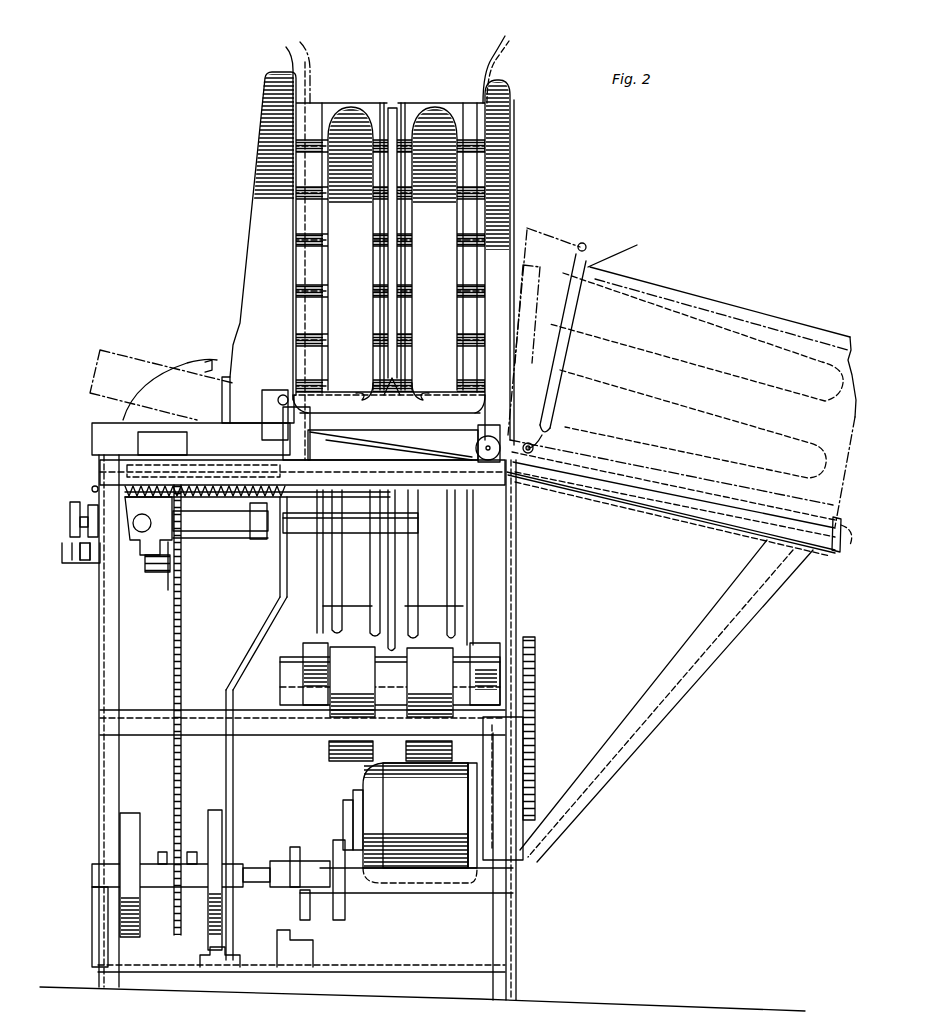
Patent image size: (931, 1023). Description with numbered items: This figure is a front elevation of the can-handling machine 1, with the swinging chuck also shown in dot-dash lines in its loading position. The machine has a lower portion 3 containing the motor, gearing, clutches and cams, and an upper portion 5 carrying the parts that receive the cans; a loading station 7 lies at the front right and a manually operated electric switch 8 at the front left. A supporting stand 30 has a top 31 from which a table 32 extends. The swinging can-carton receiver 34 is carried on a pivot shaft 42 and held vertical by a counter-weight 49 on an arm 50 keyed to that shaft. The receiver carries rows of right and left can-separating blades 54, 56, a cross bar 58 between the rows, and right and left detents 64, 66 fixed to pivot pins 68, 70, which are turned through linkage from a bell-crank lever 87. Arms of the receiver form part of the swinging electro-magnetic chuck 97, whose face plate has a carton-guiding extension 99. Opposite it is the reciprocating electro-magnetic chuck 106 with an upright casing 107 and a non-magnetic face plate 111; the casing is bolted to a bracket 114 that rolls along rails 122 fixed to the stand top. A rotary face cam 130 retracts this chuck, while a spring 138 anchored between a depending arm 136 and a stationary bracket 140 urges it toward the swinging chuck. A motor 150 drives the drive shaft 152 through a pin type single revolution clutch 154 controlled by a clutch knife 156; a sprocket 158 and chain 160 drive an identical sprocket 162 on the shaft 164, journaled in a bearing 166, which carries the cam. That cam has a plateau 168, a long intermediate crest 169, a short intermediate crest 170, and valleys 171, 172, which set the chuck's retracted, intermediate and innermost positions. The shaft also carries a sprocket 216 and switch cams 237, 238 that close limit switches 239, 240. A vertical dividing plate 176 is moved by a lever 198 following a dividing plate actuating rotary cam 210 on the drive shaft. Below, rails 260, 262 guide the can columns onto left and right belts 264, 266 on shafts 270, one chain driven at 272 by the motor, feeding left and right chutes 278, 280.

The machine 1 is at (610, 210).
The lower portion 3 is at (82, 684).
The upper portion 5 is at (165, 187).
The loading station 7 is at (768, 600).
The electric switch 8 is at (157, 432).
The supporting stand 30 is at (97, 775).
The top 31 is at (260, 451).
The table 32 is at (671, 498).
The swinging can-carton receiver 34 is at (512, 101).
The pivot shaft 42 is at (505, 452).
The counter-weight 49 is at (118, 363).
The arm 50 is at (248, 404).
The right can-separating blades 54 is at (441, 110).
The left can-separating blades 56 is at (349, 110).
The cross bar 58 is at (400, 416).
The right detents 64 is at (415, 398).
The left detents 66 is at (368, 398).
The right pivot pin 68 is at (511, 397).
The left pivot pin 70 is at (289, 425).
The bell-crank lever 87 is at (350, 534).
The swinging electro-magnetic chuck 97 is at (516, 170).
The carton-guiding extension 99 is at (667, 297).
The reciprocating electro-magnetic chuck 106 is at (318, 48).
The upright casing 107 is at (262, 150).
The face plate 111 is at (287, 50).
The bracket 114 is at (206, 361).
The rails 122 is at (90, 437).
The rotary face cam 130 is at (172, 596).
The depending arm 136 is at (97, 467).
The spring 138 is at (235, 492).
The stationary bracket 140 is at (300, 503).
The motor 150 is at (450, 872).
The drive shaft 152 is at (258, 867).
The pin type single revolution clutch 154 is at (320, 928).
The clutch knife 156 is at (300, 918).
The sprocket 158 is at (178, 842).
The chain 160 is at (184, 700).
The sprocket 162 is at (178, 553).
The shaft 164 is at (148, 525).
The bearing 166 is at (235, 573).
The plateau 168 is at (203, 473).
The long intermediate crest 169 is at (165, 575).
The short intermediate crest 170 is at (82, 520).
The valley 171 is at (181, 520).
The valley 172 is at (170, 568).
The dividing plate 176 is at (392, 104).
The lever 198 is at (236, 778).
The dividing plate actuating rotary cam 210 is at (210, 810).
The sprocket 216 is at (255, 552).
The switch cam 237 is at (73, 505).
The switch cam 238 is at (96, 503).
The limit switch 239 is at (62, 563).
The limit switch 240 is at (86, 565).
The rail 260 is at (342, 602).
The rail 262 is at (420, 602).
The left belt 264 is at (352, 648).
The right belt 266 is at (428, 649).
The shafts 270 is at (313, 675).
The chain drive 272 is at (538, 729).
The left chute 278 is at (315, 581).
The right chute 280 is at (485, 589).